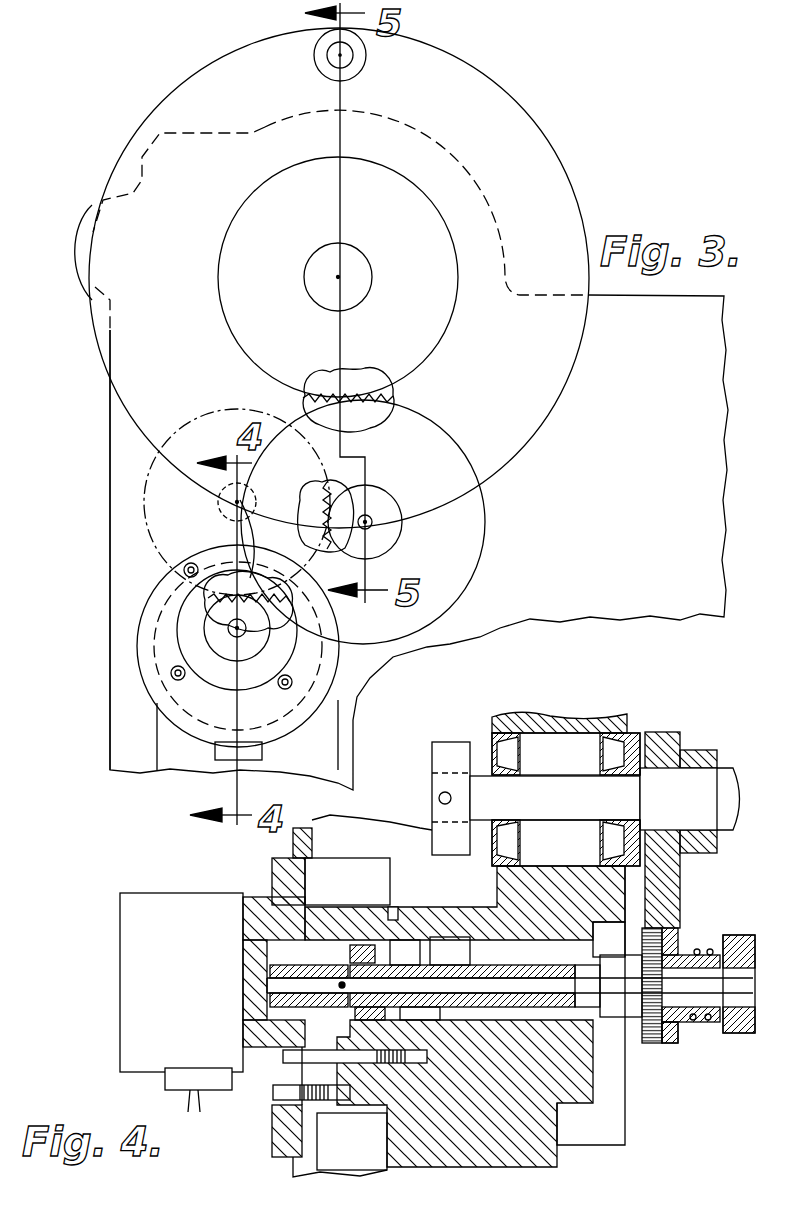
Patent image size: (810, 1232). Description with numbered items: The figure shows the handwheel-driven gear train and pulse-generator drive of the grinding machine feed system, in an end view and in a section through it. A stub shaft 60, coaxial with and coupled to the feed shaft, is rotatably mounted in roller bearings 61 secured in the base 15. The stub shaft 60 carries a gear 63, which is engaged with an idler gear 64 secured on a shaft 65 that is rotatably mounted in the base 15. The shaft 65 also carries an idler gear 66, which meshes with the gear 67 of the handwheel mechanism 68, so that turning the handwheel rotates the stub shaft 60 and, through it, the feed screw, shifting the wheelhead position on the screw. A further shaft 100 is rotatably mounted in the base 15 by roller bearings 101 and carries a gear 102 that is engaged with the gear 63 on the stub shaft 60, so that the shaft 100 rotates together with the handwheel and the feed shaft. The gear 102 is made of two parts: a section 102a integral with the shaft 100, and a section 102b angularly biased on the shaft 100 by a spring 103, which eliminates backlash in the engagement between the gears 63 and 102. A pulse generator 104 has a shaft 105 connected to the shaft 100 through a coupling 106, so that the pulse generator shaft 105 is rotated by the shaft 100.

In FIG. 3, the base 15 is at (627, 485).
In FIG. 4, the base 15 is at (518, 717).
In FIG. 3, the stub shaft 60 is at (225, 517).
In FIG. 4, the stub shaft 60 is at (551, 809).
In FIG. 4, the roller bearings 61 is at (600, 745).
In FIG. 3, the gear 63 is at (150, 481).
In FIG. 4, the gear 63 is at (680, 877).
In FIG. 3, the idler gear 64 is at (398, 540).
In FIG. 3, the shaft 65 is at (371, 518).
In FIG. 3, the idler gear 66 is at (480, 560).
In FIG. 3, the gear 67 is at (425, 363).
In FIG. 3, the handwheel mechanism 68 is at (556, 131).
In FIG. 3, the shaft 100 is at (233, 637).
In FIG. 4, the shaft 100 is at (493, 1008).
In FIG. 4, the roller bearings 101 is at (550, 955).
In FIG. 3, the gear 102 is at (203, 618).
In FIG. 4, the gear 102 is at (686, 931).
In FIG. 4, the gear section 102a is at (650, 1044).
In FIG. 4, the gear section 102b is at (679, 1042).
In FIG. 4, the spring 103 is at (701, 950).
In FIG. 4, the pulse generator 104 is at (190, 971).
In FIG. 4, the shaft 105 is at (280, 985).
In FIG. 4, the coupling 106 is at (273, 963).